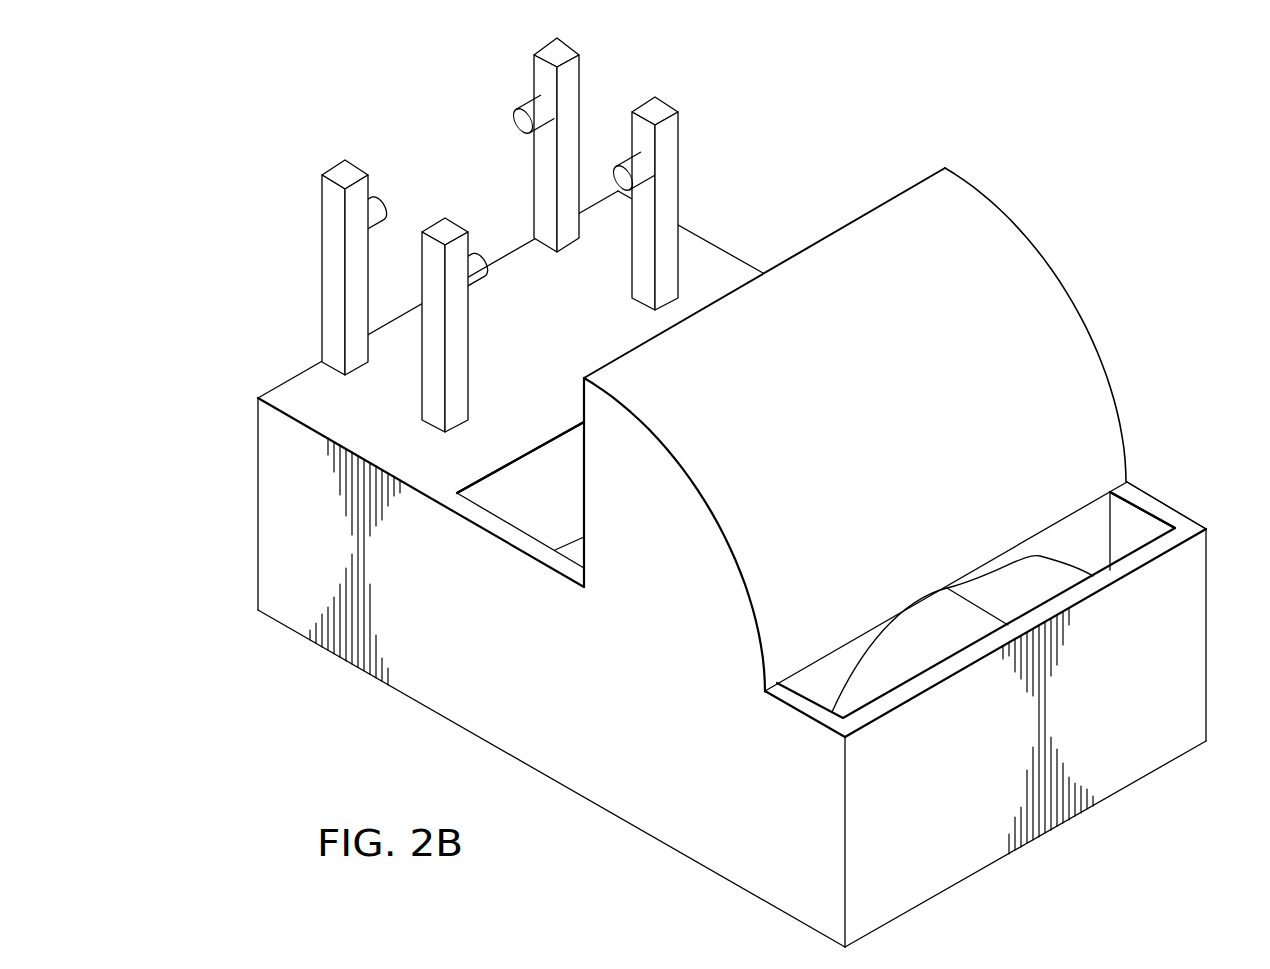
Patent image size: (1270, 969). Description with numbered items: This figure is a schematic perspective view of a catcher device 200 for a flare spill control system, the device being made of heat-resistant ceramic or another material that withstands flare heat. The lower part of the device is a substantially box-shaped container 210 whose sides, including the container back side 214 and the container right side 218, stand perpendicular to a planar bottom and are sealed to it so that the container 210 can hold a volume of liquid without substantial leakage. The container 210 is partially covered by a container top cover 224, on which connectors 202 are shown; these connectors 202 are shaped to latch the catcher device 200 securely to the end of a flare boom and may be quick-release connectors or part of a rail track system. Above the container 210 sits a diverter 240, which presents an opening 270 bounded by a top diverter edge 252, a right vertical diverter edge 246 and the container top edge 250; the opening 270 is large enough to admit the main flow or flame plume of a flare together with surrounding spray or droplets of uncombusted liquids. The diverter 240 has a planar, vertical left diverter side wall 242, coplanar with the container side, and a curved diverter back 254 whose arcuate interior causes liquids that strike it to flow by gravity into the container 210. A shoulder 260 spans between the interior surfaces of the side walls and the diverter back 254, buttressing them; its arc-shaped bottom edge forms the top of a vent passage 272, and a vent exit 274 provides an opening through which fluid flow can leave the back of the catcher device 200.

The catcher device 200 is at (736, 489).
The connectors 202 is at (321, 210).
The container 210 is at (740, 569).
The container back side 214 is at (1135, 764).
The container right side 218 is at (475, 715).
The container top cover 224 is at (570, 323).
The diverter 240 is at (833, 430).
The left diverter side wall 242 is at (700, 520).
The right vertical diverter edge 246 is at (583, 396).
The container top edge 250 is at (513, 476).
The top diverter edge 252 is at (857, 219).
The diverter back 254 is at (1073, 318).
The shoulder 260 is at (1078, 527).
The opening 270 is at (568, 518).
The vent passage 272 is at (991, 576).
The vent exit 274 is at (1145, 523).